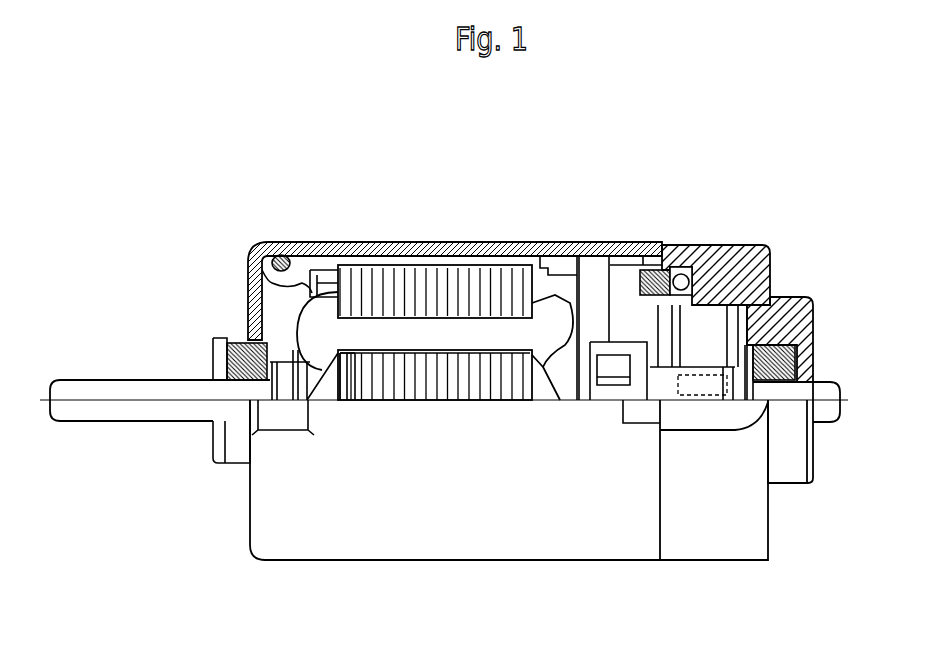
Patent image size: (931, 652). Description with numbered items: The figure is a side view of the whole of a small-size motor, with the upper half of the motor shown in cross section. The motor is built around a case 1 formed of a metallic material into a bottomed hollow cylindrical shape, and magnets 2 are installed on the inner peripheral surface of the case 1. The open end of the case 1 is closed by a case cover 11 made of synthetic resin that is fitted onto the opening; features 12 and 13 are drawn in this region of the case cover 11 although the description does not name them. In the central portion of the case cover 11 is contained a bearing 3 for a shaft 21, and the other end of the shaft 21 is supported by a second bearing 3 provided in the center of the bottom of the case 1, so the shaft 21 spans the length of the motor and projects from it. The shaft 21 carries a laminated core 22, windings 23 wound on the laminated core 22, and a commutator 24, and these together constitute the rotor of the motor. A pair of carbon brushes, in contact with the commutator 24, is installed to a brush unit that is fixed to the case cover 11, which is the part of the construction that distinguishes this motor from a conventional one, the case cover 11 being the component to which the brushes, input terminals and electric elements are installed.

The case 1 is at (452, 242).
The magnets 2 is at (558, 263).
The bearing 3 is at (233, 343).
The case cover 11 is at (733, 250).
The flange 12 is at (707, 325).
The ball retainer 13 is at (662, 278).
The shaft 21 is at (95, 421).
The laminated core 22 is at (387, 268).
The windings 23 is at (260, 270).
The commutator 24 is at (643, 393).